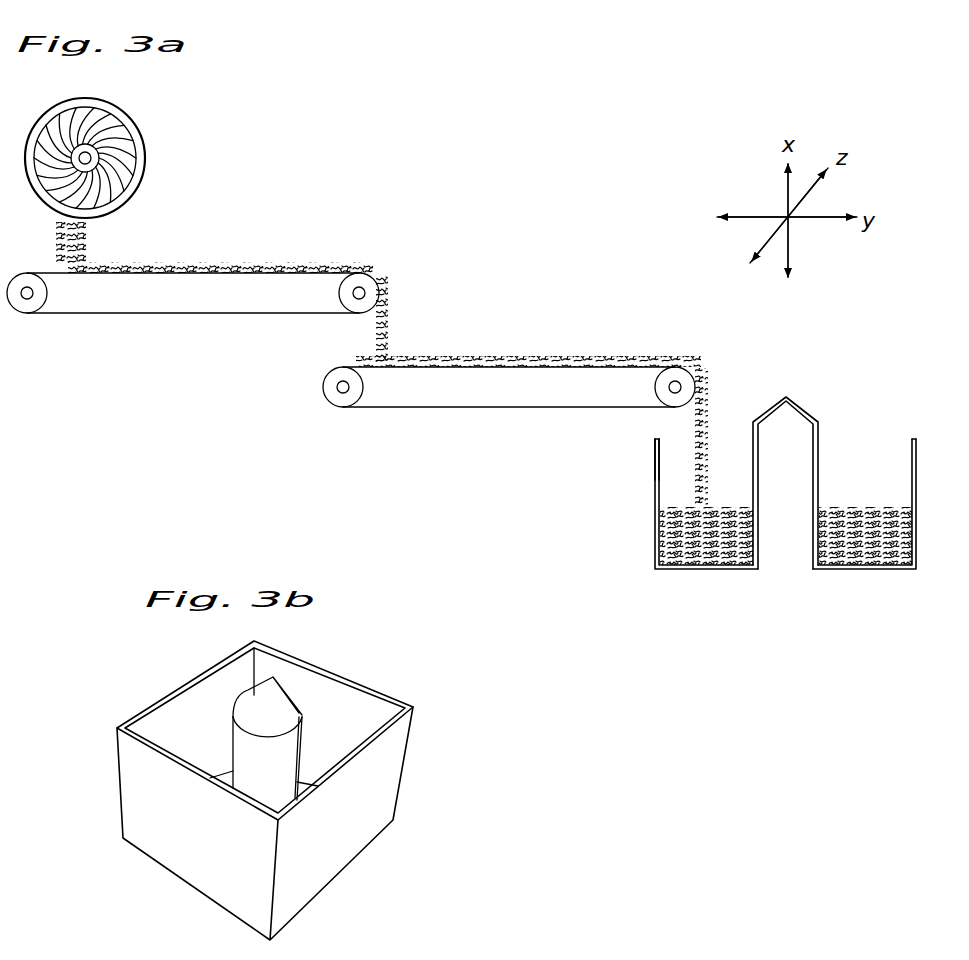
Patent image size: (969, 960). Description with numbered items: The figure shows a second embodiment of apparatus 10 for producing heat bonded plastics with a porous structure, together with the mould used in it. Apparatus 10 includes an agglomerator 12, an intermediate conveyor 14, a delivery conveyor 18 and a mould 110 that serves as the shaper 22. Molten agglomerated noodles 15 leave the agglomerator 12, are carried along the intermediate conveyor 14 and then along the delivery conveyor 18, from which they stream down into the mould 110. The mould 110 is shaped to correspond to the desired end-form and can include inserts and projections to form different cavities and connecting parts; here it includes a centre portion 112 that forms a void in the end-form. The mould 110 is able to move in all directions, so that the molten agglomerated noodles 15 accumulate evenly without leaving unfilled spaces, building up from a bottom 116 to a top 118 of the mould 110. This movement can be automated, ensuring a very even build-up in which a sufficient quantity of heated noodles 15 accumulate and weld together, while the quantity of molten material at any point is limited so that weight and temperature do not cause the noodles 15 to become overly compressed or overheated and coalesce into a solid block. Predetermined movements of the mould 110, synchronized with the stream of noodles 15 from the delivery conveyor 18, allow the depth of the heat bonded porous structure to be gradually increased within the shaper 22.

In FIG. 3A, the apparatus 10 is at (463, 172).
In FIG. 3A, the agglomerator 12 is at (151, 122).
In FIG. 3A, the intermediate conveyor 14 is at (160, 320).
In FIG. 3A, the molten agglomerated noodles 15 is at (178, 263).
In FIG. 3A, the delivery conveyor 18 is at (372, 416).
In FIG. 3A, the shaper 22 is at (875, 408).
In FIG. 3A, the centre portion 112 is at (806, 395).
In FIG. 3B, the centre portion 112 is at (301, 708).
In FIG. 3A, the bottom 116 is at (726, 568).
In FIG. 3A, the top 118 is at (656, 441).
In FIG. 3B, the mould 110 is at (423, 764).